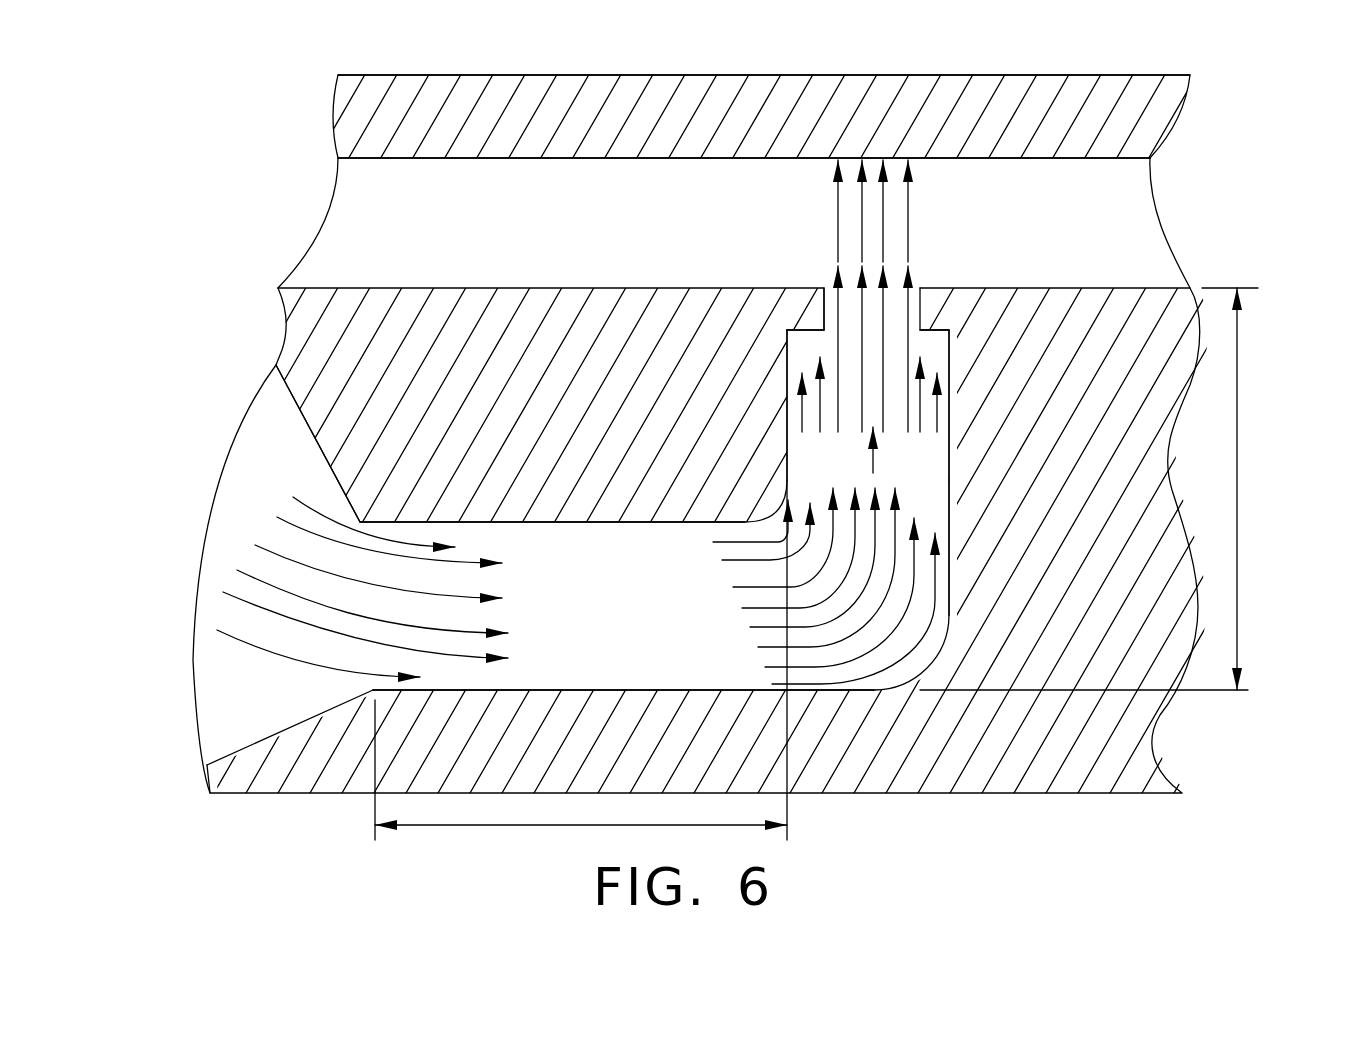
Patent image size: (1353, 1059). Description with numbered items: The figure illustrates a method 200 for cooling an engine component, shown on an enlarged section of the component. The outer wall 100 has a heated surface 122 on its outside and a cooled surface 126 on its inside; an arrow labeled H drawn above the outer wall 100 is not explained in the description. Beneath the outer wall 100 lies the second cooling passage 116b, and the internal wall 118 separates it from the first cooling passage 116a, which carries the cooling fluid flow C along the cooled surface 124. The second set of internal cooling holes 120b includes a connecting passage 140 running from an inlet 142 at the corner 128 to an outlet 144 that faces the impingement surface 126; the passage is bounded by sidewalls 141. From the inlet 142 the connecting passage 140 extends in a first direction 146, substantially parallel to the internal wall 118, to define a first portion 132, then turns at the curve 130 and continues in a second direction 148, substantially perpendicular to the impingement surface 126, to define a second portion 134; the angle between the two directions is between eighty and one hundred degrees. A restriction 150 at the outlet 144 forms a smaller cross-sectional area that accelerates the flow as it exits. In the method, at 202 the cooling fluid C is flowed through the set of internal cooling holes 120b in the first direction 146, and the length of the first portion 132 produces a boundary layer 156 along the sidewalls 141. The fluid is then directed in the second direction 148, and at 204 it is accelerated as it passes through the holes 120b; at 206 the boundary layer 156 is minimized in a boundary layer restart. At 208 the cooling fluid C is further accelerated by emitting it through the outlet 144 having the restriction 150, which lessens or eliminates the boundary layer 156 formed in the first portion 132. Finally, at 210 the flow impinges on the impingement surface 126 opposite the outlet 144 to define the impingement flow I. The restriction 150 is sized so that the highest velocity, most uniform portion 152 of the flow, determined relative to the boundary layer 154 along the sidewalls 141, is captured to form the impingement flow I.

The method for cooling an engine component 200 is at (260, 116).
The outer wall 100 is at (720, 114).
The heated surface 122 is at (720, 75).
The cooled surface 126 is at (715, 158).
The hot gas flow direction H is at (540, 50).
The second cooling passage 116b is at (516, 234).
The internal wall 118 is at (465, 412).
The inlet 142 is at (352, 520).
The second set of internal cooling holes 120b is at (625, 548).
The first cooling passage 116a is at (280, 536).
The cooling fluid flow C is at (278, 555).
The flowing step 202 is at (243, 622).
The corner 128 is at (327, 692).
The cooled surface 124 is at (253, 742).
The sidewalls 141 is at (612, 690).
The curve 130 is at (940, 645).
The connecting passage 140 is at (610, 599).
The first direction 146 is at (520, 606).
The first portion 132 is at (522, 825).
The second portion 134 is at (1240, 518).
The outlet 144 is at (921, 278).
The impinging step 210 is at (918, 162).
The impingement flow I is at (910, 218).
The second direction 148 is at (873, 463).
The accelerating by emitting step 208 is at (832, 262).
The restriction 150 is at (812, 300).
The highest velocity portion 152 is at (877, 350).
The boundary layer minimizing step 206 is at (806, 346).
The accelerating step 204 is at (887, 350).
The boundary layer 154 is at (897, 402).
The boundary layer 156 is at (922, 507).